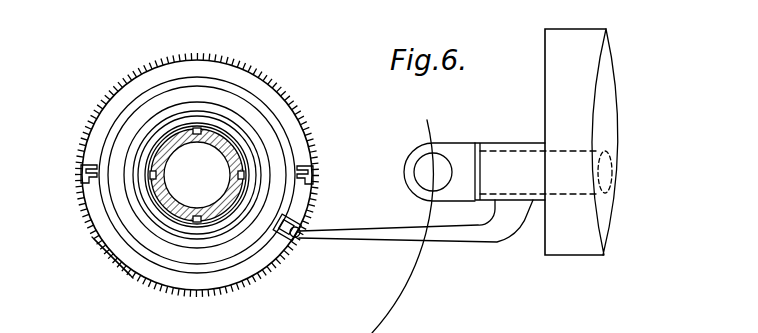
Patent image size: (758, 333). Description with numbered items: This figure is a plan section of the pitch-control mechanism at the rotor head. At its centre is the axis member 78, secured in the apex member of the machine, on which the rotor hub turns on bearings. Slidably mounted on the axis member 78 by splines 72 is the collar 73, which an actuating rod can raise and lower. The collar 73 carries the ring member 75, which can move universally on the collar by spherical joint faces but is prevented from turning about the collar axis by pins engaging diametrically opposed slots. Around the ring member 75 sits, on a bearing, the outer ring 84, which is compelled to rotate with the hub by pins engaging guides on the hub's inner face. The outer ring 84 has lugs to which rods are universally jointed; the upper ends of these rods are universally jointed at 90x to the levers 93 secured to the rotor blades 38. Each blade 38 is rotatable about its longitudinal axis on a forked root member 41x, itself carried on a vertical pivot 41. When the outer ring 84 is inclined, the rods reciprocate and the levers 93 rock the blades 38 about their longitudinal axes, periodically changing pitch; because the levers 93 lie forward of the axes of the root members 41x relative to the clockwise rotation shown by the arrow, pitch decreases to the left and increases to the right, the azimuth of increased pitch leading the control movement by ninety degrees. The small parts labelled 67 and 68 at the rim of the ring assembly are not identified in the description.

The rotor blades 38 is at (503, 145).
The vertical pivots 41 is at (436, 165).
The forked root members 41x is at (461, 157).
The clip 67 is at (88, 185).
The gear rim 68 is at (92, 191).
The splines 72 is at (195, 125).
The collar 73 is at (150, 197).
The ring member 75 is at (165, 247).
The axis member 78 is at (196, 221).
The outer ring 84 is at (170, 225).
The universal joints 90x is at (298, 241).
The levers 93 is at (467, 233).